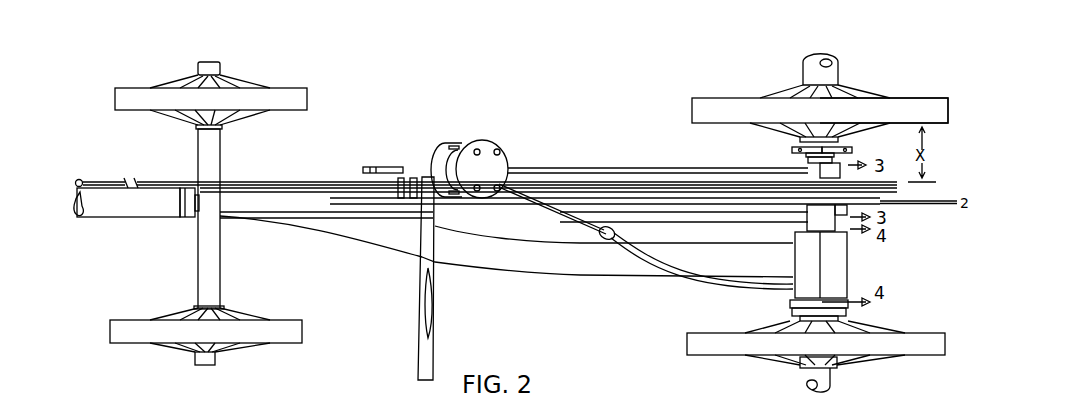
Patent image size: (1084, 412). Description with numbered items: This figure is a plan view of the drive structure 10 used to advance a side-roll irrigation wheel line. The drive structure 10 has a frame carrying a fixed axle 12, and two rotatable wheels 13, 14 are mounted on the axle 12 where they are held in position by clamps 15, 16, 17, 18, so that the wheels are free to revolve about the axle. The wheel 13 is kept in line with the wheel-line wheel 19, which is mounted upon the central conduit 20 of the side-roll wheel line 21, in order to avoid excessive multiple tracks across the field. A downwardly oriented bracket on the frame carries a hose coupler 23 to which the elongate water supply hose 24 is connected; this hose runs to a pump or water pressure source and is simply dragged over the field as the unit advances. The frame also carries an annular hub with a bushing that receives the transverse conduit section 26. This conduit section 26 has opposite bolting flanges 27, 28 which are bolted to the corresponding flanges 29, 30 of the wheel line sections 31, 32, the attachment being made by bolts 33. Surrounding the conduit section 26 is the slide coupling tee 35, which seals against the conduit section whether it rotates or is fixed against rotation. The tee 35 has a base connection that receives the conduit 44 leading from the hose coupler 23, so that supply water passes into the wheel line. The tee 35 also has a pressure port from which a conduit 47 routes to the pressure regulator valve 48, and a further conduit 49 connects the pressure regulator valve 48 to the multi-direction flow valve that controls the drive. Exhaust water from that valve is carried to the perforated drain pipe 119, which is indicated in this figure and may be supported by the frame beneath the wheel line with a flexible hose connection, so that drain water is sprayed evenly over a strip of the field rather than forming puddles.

The drive structure 10 is at (338, 205).
The fixed axle 12 is at (213, 150).
The rotatable wheel 13 is at (308, 100).
The rotatable wheel 14 is at (304, 331).
The clamp 15 is at (230, 74).
The clamp 16 is at (192, 129).
The clamp 17 is at (226, 312).
The clamp 18 is at (220, 357).
The wheel-line wheel 19 is at (712, 108).
The central conduit 20 is at (836, 82).
The side-roll wheel line 21 is at (926, 100).
The hose coupler 23 is at (192, 224).
The water supply hose 24 is at (140, 210).
The transverse conduit section 26 is at (810, 163).
The bolting flange 27 is at (800, 153).
The bolting flange 28 is at (790, 303).
The flange 29 is at (792, 312).
The flange 30 is at (853, 148).
The wheel line section 31 is at (812, 62).
The wheel line section 32 is at (834, 386).
The bolt 33 is at (790, 140).
The slide coupling tee 35 is at (848, 274).
The conduit 44 is at (318, 222).
The conduit 47 is at (702, 287).
The pressure regulator valve 48 is at (601, 242).
The conduit 49 is at (562, 186).
The perforated drain pipe 119 is at (434, 346).